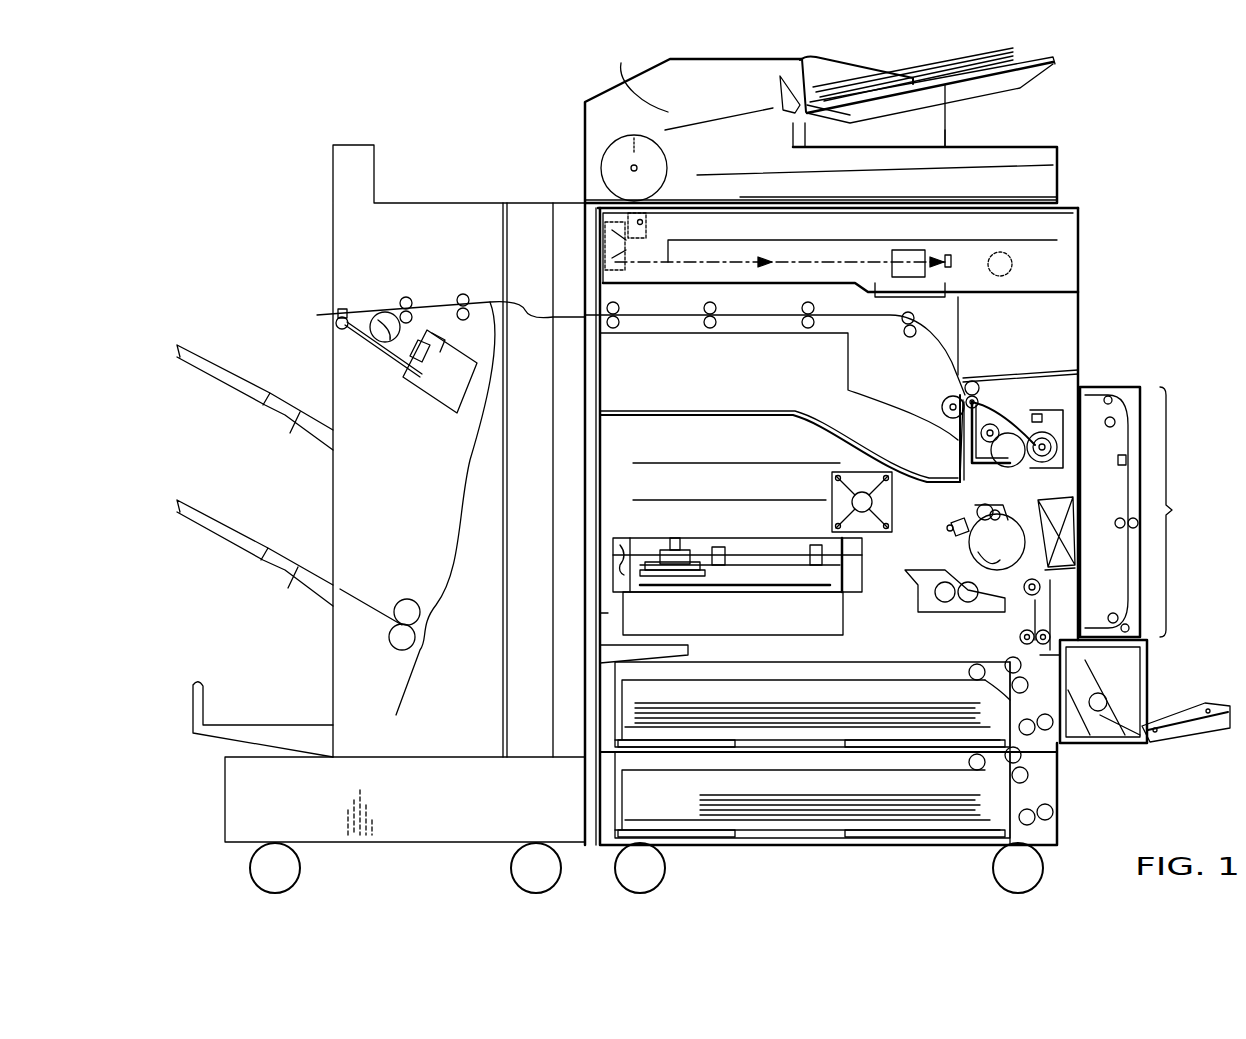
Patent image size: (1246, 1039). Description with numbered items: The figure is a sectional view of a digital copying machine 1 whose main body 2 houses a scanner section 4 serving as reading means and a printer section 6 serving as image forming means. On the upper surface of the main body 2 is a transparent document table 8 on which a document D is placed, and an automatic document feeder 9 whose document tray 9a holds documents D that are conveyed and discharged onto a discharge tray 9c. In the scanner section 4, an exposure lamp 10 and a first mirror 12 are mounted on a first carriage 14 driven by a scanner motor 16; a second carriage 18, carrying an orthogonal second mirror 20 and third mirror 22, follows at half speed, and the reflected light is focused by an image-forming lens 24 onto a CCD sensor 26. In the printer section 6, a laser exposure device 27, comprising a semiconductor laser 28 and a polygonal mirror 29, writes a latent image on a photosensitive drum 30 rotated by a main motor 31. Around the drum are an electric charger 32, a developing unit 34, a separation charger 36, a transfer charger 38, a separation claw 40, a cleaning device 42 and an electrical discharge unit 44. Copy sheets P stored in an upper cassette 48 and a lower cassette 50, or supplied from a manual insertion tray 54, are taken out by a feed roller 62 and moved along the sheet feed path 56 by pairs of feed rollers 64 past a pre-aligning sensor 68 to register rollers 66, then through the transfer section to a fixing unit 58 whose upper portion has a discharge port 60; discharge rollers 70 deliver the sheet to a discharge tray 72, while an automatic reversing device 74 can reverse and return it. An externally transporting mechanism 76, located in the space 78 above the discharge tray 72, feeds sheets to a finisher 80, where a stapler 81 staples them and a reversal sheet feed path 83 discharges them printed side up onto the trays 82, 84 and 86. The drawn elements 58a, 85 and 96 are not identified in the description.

The digital copying machine 1 is at (1137, 170).
The main body 2 is at (1080, 350).
The scanner section 4 is at (1078, 260).
The printer section 6 is at (1150, 665).
The document table 8 is at (1020, 200).
The automatic document feeder 9 is at (834, 116).
The document tray 9a is at (1030, 80).
The discharge tray 9c is at (984, 147).
The document D is at (1013, 48).
The exposure lamp 10 is at (648, 222).
The first mirror 12 is at (780, 254).
The first carriage 14 is at (680, 240).
The scanner motor 16 is at (1012, 264).
The second carriage 18 is at (600, 250).
The second mirror 20 is at (600, 228).
The third mirror 22 is at (600, 268).
The image-forming lens 24 is at (910, 250).
The CCD sensor 26 is at (951, 261).
The laser exposure device 27 is at (780, 548).
The semiconductor laser 28 is at (620, 545).
The polygonal mirror 29 is at (685, 548).
The photosensitive drum 30 is at (1012, 520).
The main motor 31 is at (892, 497).
The electric charger 32 is at (953, 530).
The developing unit 34 is at (966, 608).
The separation charger 36 is at (1040, 589).
The transfer charger 38 is at (1076, 567).
The separation claw 40 is at (1065, 520).
The cleaning device 42 is at (985, 515).
The electrical discharge unit 44 is at (965, 520).
The upper cassette 48 is at (615, 692).
The lower cassette 50 is at (615, 797).
The manual insertion tray 54 is at (1192, 740).
The sheet feed path 56 is at (1070, 548).
The fixing unit 58 is at (1018, 412).
The fixing device cover 58a is at (1058, 378).
The discharge port 60 is at (952, 395).
The feed roller 62 is at (975, 676).
The feed rollers 64 is at (1035, 640).
The register rollers 66 is at (1022, 630).
The pre-aligning sensor 68 is at (1113, 612).
The discharge rollers 70 is at (970, 380).
The discharge tray 72 is at (800, 413).
The automatic reversing device 74 is at (1143, 512).
The externally transporting mechanism 76 is at (790, 318).
The space 78 is at (752, 362).
The finisher 80 is at (425, 205).
The stapler 81 is at (440, 388).
The tray 82 is at (252, 378).
The reversal sheet feed path 83 is at (458, 525).
The tray 84 is at (252, 533).
The inlet roller 85 is at (335, 312).
The tray 86 is at (225, 738).
The operation dial 96 is at (600, 167).
The copy sheet P is at (982, 385).